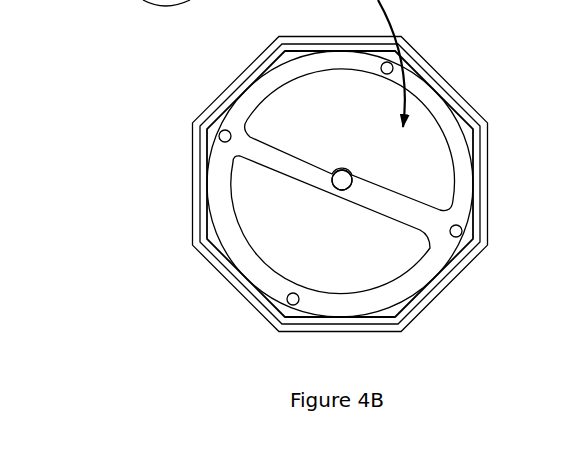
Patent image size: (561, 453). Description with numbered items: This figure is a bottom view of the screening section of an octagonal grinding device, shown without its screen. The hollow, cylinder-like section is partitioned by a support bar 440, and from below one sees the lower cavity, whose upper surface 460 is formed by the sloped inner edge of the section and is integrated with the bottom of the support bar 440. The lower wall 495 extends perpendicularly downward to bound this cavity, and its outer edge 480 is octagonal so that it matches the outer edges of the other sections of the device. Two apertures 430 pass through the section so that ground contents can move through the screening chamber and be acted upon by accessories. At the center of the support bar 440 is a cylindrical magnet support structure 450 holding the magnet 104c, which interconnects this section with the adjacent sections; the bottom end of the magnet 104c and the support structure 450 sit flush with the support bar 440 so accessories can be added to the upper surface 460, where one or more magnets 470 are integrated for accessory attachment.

The outer edge 480 is at (443, 90).
The lower wall 495 is at (332, 325).
The upper surface 460 is at (248, 263).
The magnets 470 is at (299, 300).
The apertures 430 is at (323, 127).
The support bar 440 is at (277, 155).
The magnet support structure 450 is at (318, 190).
The magnet 104c is at (332, 188).